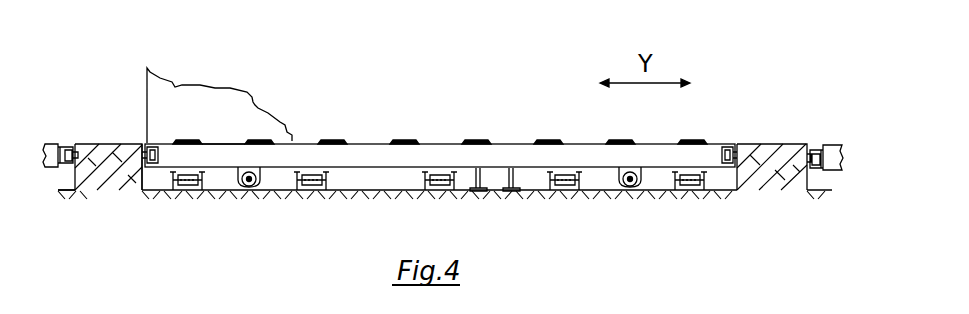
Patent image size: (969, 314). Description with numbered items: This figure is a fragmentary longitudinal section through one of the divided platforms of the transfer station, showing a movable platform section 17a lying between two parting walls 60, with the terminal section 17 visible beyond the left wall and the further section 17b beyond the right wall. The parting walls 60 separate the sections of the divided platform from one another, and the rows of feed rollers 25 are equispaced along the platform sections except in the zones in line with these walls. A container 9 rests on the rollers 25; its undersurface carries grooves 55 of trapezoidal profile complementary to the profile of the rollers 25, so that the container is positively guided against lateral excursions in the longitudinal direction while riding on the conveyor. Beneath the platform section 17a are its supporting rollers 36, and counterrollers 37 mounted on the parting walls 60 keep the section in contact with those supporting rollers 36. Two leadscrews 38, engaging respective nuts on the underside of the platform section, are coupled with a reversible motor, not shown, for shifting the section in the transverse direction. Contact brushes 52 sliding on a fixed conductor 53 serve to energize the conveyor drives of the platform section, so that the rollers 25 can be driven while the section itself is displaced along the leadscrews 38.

The container 9 is at (255, 110).
The terminal section of platform 17 is at (50, 143).
The platform section 17a is at (583, 155).
The platform section 17b is at (833, 150).
The feed roller 25 is at (405, 140).
The supporting roller 36 is at (188, 191).
The counterroller 37 is at (151, 143).
The leadscrew 38 is at (255, 188).
The contact brush 52 is at (511, 170).
The fixed conductor 53 is at (512, 192).
The groove 55 is at (243, 142).
The parting wall 60 is at (88, 143).